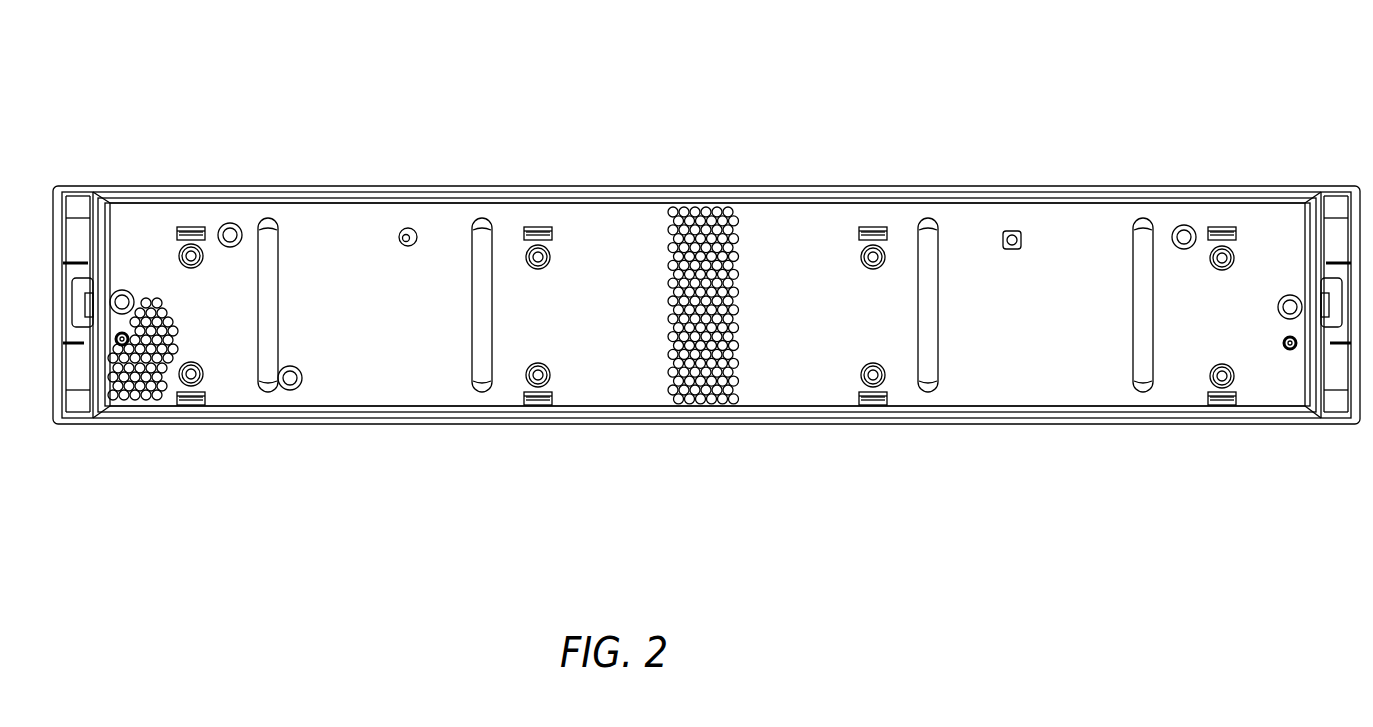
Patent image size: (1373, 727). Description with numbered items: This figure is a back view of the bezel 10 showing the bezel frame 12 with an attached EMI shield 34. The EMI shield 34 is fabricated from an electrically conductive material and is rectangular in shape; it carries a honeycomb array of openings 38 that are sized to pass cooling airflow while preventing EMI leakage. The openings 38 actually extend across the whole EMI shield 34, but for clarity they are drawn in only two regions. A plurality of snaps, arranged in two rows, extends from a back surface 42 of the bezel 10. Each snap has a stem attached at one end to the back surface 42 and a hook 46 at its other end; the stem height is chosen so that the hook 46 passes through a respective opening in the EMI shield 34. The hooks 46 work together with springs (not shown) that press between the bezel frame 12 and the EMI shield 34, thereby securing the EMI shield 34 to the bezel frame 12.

The bezel 10 is at (774, 108).
The bezel frame 12 is at (1090, 316).
The EMI shield 34 is at (333, 240).
The openings 38 is at (737, 298).
The back surface 42 is at (83, 250).
The hook 46 is at (190, 227).